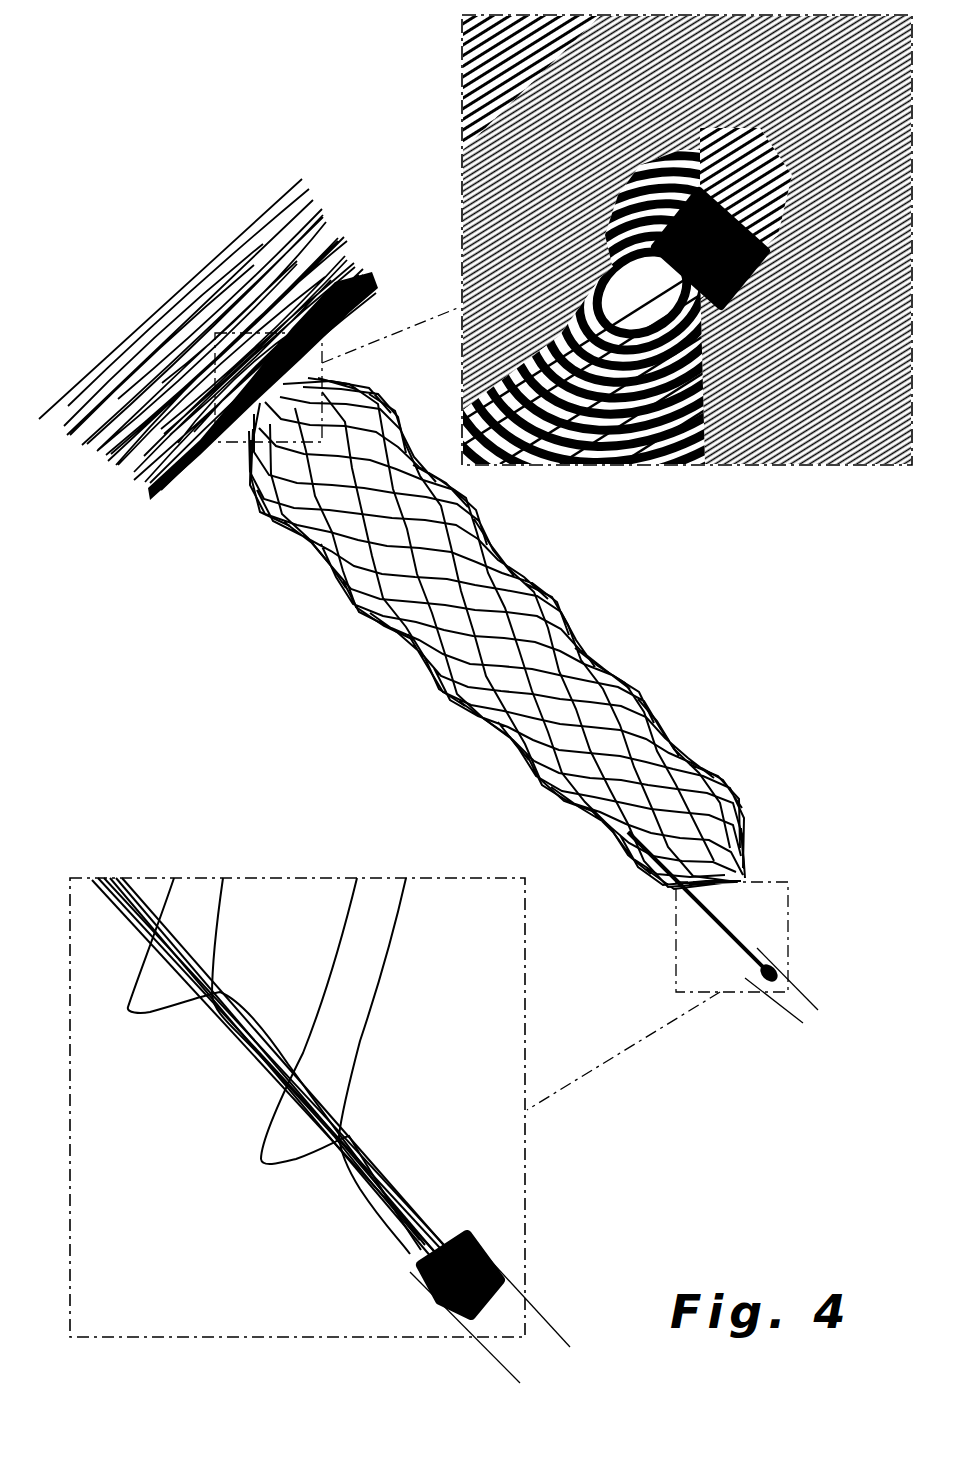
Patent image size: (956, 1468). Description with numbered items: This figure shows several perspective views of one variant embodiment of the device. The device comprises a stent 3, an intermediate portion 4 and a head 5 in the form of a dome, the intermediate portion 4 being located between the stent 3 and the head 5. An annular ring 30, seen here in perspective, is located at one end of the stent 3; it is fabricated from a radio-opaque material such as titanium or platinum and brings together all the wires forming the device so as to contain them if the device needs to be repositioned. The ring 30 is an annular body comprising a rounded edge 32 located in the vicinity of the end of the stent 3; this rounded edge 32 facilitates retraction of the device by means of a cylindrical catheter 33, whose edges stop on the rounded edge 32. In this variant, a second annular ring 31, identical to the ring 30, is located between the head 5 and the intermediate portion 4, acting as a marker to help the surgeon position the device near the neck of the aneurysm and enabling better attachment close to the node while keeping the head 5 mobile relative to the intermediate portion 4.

The stent 3 is at (435, 702).
The intermediate portion 4 is at (262, 549).
The head 5 is at (344, 190).
The annular ring 30 is at (480, 1262).
The second annular ring 31 is at (704, 310).
The rounded edge 32 is at (463, 1322).
The catheter 33 is at (790, 1001).